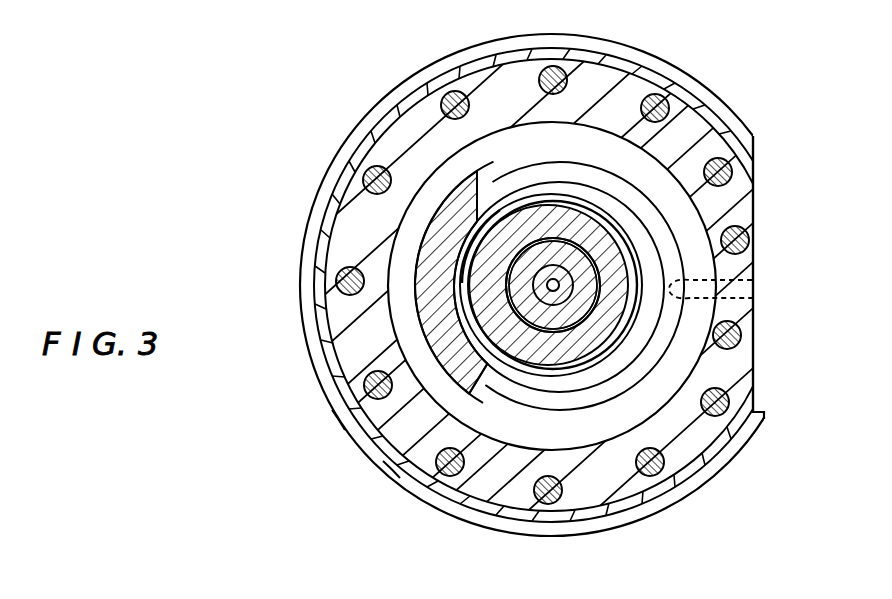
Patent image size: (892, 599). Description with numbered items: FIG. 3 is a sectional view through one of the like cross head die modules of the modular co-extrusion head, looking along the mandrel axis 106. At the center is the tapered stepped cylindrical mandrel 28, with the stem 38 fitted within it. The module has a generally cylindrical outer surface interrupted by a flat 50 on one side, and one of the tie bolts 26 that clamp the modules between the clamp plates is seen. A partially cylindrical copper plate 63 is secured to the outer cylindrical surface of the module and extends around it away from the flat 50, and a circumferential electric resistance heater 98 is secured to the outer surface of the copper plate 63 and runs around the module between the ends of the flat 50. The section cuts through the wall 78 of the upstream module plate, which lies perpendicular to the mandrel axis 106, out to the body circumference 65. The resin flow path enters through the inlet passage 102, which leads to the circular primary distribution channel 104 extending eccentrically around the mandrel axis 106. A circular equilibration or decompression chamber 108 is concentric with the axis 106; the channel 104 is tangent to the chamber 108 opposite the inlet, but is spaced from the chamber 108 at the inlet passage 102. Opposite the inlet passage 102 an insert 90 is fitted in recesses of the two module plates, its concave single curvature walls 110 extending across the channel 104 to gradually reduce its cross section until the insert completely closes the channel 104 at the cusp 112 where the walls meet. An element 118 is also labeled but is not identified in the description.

The tie bolts 26 is at (347, 288).
The tapered stepped cylindrical mandrel 28 is at (561, 250).
The stem 38 is at (535, 280).
The flat 50 is at (753, 240).
The partially cylindrical copper plate 63 is at (656, 77).
The body circumference 65 is at (332, 410).
The wall 78 is at (520, 427).
The insert 90 is at (422, 215).
The circumferential electric resistance heater 98 is at (383, 461).
The inlet passage 102 is at (735, 268).
The primary distribution channel 104 is at (552, 153).
The mandrel axis 106 is at (553, 292).
The equilibration or decompression chamber 108 is at (580, 368).
The concave single curvature walls 110 is at (458, 387).
The cusp 112 is at (464, 283).
The outer casing 118 is at (551, 268).